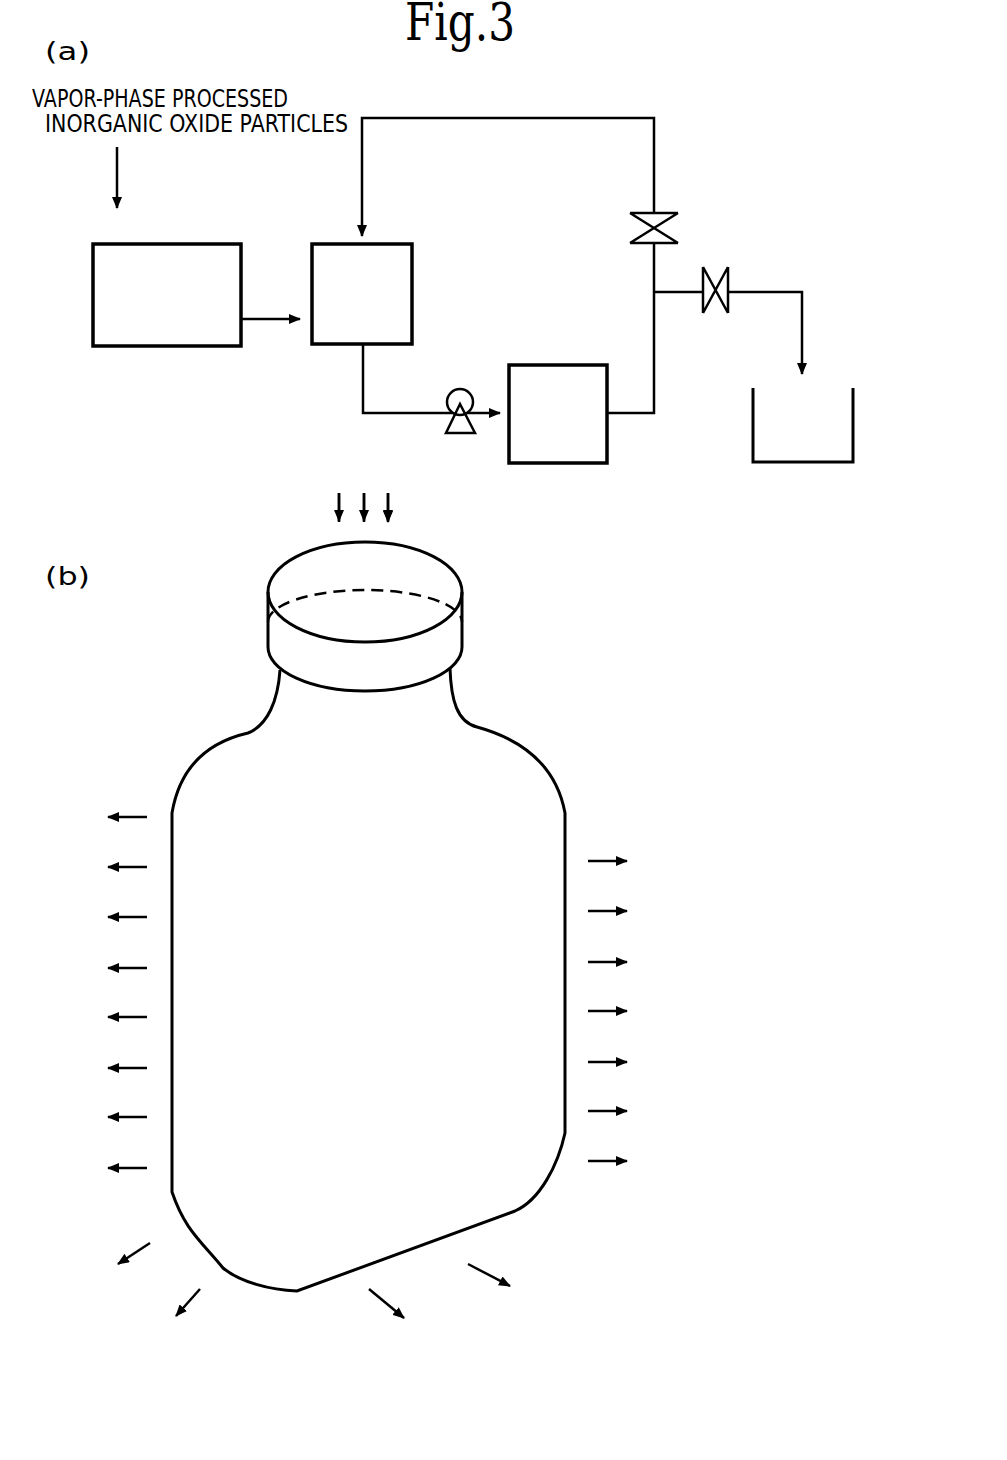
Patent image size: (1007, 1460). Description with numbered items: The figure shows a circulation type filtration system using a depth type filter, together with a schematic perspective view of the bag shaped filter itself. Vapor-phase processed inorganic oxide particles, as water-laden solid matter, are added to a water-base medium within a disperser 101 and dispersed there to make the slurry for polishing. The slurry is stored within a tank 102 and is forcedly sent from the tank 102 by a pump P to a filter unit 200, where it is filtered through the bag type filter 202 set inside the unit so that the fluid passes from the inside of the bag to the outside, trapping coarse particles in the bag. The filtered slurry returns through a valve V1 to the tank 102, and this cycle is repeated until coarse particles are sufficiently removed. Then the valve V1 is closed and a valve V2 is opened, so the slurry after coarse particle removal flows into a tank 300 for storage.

The disperser 101 is at (193, 244).
The tank 102 is at (376, 244).
The filter unit 200 is at (548, 365).
The bag type filter 202 is at (240, 729).
The tank 300 is at (753, 414).
The pump P is at (456, 389).
The valve V1 is at (634, 226).
The valve V2 is at (710, 314).